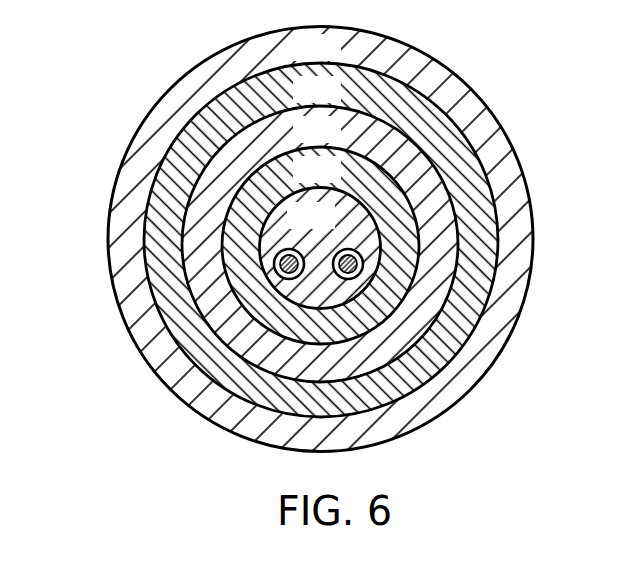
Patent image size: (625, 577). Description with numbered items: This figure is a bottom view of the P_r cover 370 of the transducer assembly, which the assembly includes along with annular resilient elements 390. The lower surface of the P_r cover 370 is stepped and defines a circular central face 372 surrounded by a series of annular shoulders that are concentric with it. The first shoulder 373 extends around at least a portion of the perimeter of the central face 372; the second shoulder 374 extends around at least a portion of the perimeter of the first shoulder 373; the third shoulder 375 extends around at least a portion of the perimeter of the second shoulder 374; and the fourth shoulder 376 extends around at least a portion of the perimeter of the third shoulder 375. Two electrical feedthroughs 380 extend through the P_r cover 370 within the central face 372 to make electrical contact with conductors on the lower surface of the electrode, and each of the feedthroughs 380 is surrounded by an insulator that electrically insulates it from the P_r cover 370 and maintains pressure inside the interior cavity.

The P_r cover 370 is at (525, 176).
The central face 372 is at (331, 226).
The first shoulder 373 is at (337, 180).
The second shoulder 374 is at (337, 140).
The third shoulder 375 is at (337, 100).
The fourth shoulder 376 is at (337, 58).
The feedthroughs 380 is at (288, 279).
The annular resilient elements 390 is at (202, 232).